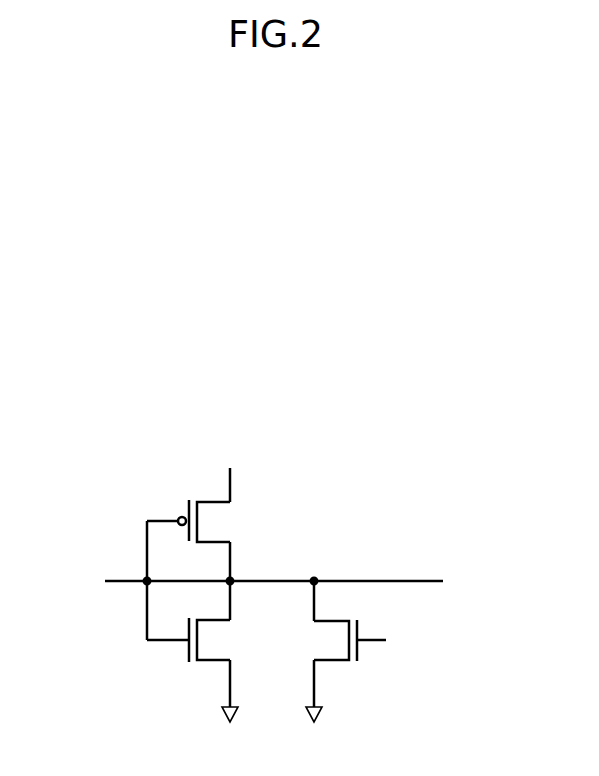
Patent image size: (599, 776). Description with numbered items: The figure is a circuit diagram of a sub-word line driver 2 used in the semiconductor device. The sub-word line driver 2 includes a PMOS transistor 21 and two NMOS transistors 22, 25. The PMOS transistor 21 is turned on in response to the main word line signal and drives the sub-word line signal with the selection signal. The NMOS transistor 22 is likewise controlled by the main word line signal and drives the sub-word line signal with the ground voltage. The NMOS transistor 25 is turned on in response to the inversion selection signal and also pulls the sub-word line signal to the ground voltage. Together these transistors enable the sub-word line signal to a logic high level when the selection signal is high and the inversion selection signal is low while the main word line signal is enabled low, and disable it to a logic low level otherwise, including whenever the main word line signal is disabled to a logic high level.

The sub-word line driver 2 is at (476, 408).
The PMOS transistor 21 is at (213, 540).
The NMOS transistor 22 is at (213, 660).
The NMOS transistor 25 is at (330, 617).